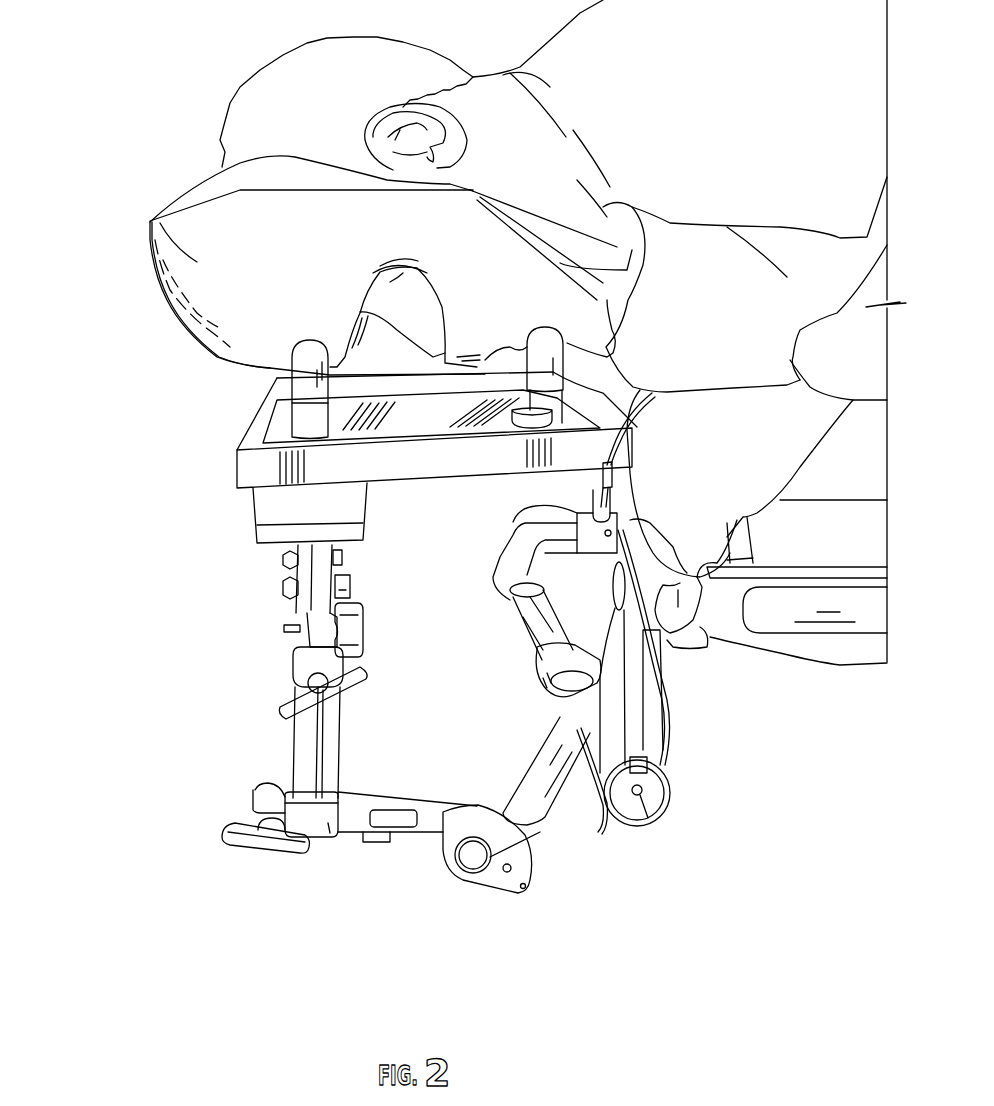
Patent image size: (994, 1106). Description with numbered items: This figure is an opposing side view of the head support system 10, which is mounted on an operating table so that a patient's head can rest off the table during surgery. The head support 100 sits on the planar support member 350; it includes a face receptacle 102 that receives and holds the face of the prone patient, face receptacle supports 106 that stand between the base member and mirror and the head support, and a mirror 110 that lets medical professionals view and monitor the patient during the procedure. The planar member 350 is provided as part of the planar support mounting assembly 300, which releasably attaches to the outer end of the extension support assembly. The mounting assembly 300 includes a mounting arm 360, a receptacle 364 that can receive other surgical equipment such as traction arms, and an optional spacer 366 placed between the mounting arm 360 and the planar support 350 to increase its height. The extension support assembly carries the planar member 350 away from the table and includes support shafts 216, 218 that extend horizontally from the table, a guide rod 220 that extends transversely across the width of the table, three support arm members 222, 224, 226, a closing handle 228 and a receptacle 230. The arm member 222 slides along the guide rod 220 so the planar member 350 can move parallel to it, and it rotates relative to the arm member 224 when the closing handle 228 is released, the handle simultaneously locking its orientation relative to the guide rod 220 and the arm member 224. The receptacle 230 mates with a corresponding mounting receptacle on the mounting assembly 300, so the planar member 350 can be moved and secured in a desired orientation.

The head support system 10 is at (102, 293).
The head support 100 is at (212, 163).
The face receptacle 102 is at (150, 218).
The face receptacle supports 106 is at (297, 382).
The mirror 110 is at (397, 427).
The support shaft 216 is at (520, 530).
The support shaft 218 is at (633, 710).
The guide rod 220 is at (593, 820).
The support arm member 222 is at (530, 820).
The support arm member 224 is at (430, 827).
The support arm member 226 is at (317, 757).
The closing handle 228 is at (563, 847).
The receptacle 230 is at (307, 670).
The planar support mounting assembly 300 is at (197, 512).
The planar support member 350 is at (449, 472).
The mounting arm 360 is at (317, 578).
The receptacle 364 is at (360, 635).
The spacer 366 is at (357, 508).